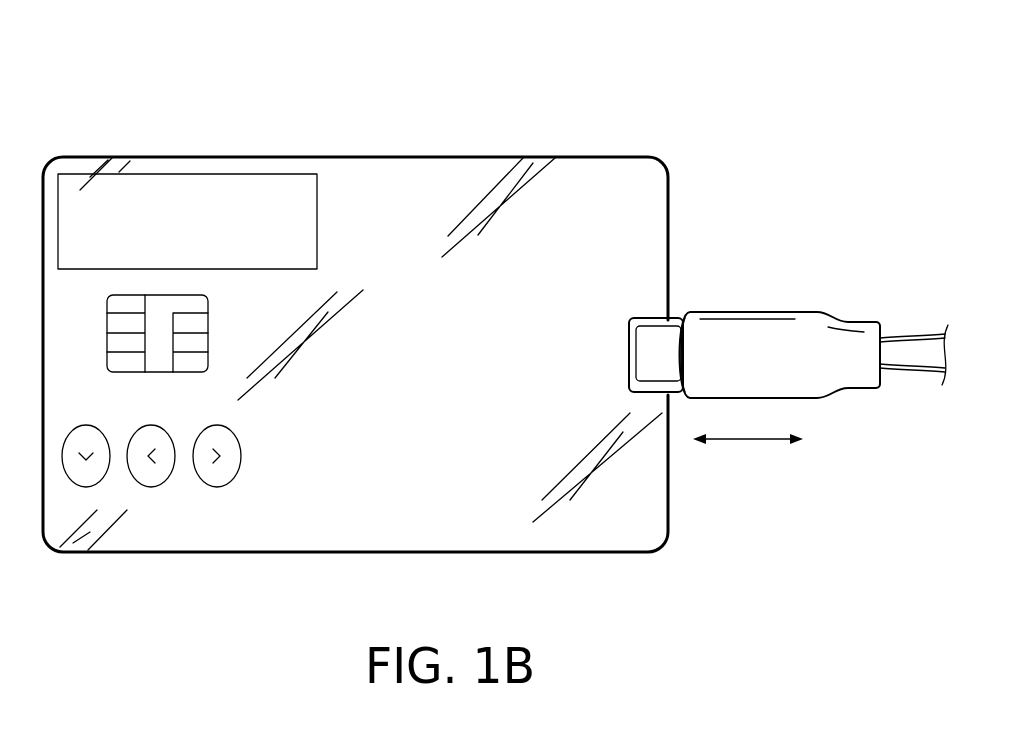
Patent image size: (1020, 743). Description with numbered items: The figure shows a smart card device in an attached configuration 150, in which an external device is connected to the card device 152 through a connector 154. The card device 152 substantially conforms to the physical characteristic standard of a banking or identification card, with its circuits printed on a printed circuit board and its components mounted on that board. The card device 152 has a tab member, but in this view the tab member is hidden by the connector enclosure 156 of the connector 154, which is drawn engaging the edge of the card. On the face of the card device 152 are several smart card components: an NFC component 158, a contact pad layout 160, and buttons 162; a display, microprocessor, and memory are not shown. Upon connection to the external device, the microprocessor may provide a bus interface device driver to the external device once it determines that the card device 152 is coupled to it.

The attached configuration 150 is at (110, 100).
The card device 152 is at (423, 156).
The connector 154 is at (773, 312).
The connector enclosure 156 is at (663, 340).
The NFC component 158 is at (158, 171).
The contact pad layout 160 is at (208, 343).
The buttons 162 is at (241, 453).